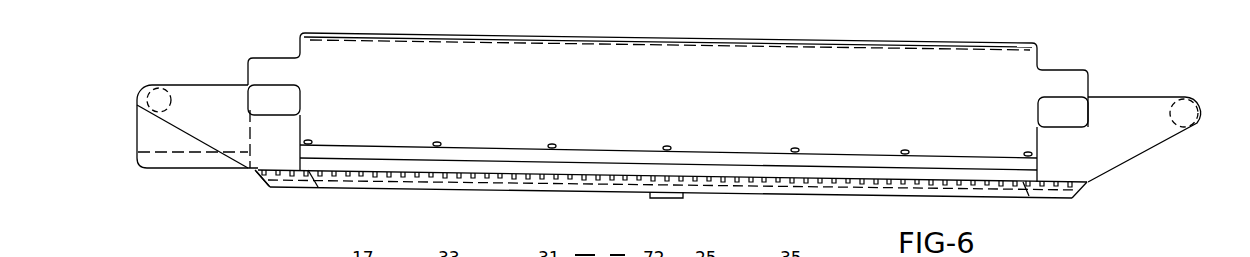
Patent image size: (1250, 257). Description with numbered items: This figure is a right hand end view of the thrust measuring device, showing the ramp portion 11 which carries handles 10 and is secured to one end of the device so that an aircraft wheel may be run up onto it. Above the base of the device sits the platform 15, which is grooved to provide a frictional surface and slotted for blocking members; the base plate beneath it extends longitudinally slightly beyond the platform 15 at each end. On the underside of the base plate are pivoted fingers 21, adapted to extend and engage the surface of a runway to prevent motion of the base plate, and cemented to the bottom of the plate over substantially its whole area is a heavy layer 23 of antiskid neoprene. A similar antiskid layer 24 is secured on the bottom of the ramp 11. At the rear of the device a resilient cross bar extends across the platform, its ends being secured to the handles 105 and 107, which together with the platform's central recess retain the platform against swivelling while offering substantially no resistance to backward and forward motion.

The handles 10 is at (273, 47).
The ramp portion 11 is at (807, 118).
The platform 15 is at (745, 38).
The pivoted fingers 21 is at (655, 198).
The heavy layer of antiskid neoprene 23 is at (268, 188).
The antiskid neoprene layer 24 is at (535, 184).
The handle 105 is at (155, 93).
The handle 107 is at (1185, 110).